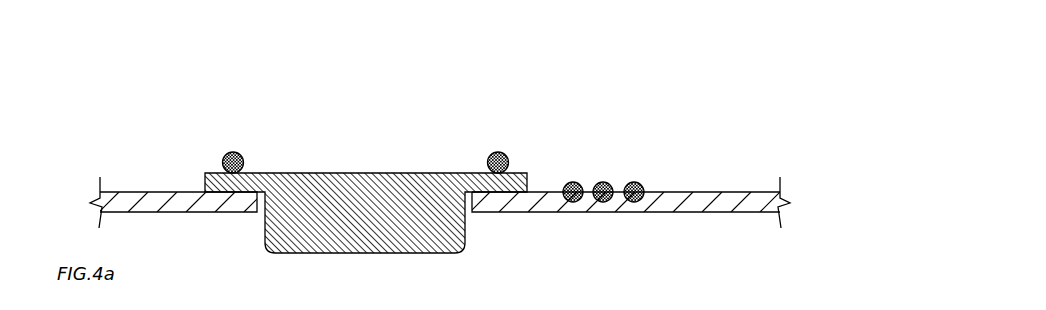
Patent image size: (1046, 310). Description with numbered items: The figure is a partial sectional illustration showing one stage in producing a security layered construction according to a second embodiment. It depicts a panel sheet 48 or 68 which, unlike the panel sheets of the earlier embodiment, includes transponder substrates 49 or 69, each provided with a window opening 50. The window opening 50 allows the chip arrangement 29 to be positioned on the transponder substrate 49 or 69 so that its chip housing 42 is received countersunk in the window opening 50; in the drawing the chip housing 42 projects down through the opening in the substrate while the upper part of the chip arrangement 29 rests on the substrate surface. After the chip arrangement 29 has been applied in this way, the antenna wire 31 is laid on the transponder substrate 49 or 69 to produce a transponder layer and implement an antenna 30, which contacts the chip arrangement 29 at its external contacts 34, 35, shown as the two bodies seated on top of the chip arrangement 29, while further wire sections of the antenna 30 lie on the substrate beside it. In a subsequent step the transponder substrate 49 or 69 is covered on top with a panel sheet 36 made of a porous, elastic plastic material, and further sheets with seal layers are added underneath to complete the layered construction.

The chip arrangement 29 is at (344, 170).
The antenna 30 is at (609, 172).
The antenna wire 31 is at (646, 177).
The external contact 34 is at (216, 168).
The external contact 35 is at (514, 166).
The panel sheet 36 is at (439, 243).
The chip housing 42 is at (321, 238).
The window opening 50 is at (474, 225).
The panel sheet 48 is at (821, 56).
The panel sheet 68 is at (769, 101).
The transponder substrate 49 is at (813, 142).
The transponder substrate 69 is at (766, 185).